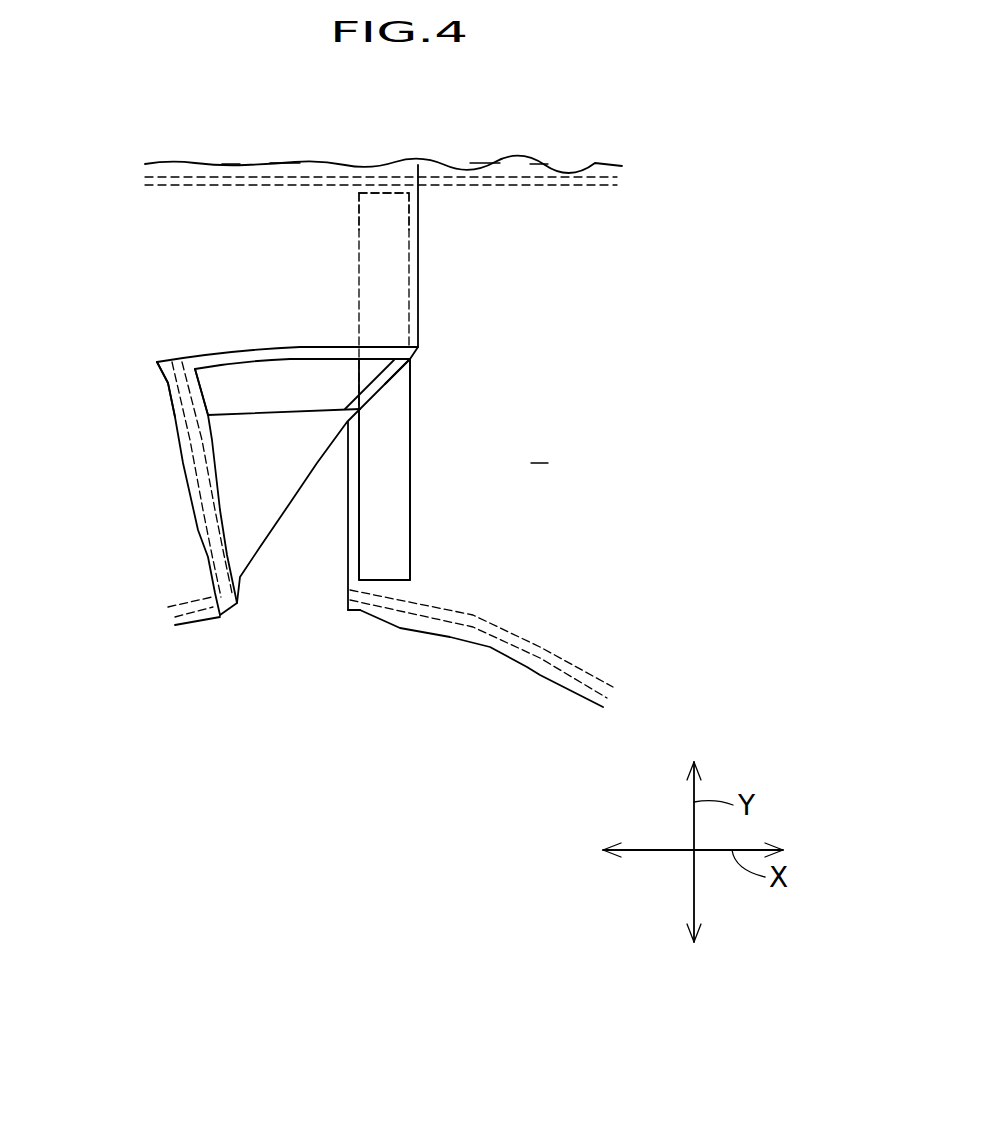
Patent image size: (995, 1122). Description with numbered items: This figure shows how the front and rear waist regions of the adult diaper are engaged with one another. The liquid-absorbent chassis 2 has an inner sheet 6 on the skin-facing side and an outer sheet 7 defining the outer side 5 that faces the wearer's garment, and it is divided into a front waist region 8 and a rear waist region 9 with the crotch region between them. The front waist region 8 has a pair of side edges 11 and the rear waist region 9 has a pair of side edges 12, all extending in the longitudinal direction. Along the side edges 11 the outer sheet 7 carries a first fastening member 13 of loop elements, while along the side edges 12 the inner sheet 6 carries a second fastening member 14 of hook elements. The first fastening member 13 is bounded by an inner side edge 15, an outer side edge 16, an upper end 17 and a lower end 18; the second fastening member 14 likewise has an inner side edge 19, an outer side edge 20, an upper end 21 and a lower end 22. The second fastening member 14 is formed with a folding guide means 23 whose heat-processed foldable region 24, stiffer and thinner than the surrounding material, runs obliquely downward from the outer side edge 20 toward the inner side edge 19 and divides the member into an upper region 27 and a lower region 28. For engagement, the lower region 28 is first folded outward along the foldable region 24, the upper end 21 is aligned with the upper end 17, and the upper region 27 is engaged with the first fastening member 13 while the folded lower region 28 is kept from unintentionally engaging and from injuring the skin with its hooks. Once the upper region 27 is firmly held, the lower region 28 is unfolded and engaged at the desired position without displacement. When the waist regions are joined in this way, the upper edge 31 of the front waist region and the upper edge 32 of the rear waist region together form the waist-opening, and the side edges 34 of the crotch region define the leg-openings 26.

The chassis 2 is at (590, 143).
The outer side 5 is at (540, 448).
The inner sheet 6 is at (207, 455).
The outer sheet 7 is at (165, 233).
The front waist region 8 is at (538, 203).
The rear waist region 9 is at (231, 200).
The side edges of the front waist region 11 is at (355, 547).
The side edges of the rear waist region 12 is at (227, 362).
The first fastening member 13 is at (410, 455).
The second fastening member 14 is at (267, 363).
The inner side edge of the first fastening member 15 is at (410, 498).
The outer side edge of the first fastening member 16 is at (359, 505).
The upper end of the first fastening member 17 is at (408, 164).
The lower end of the first fastening member 18 is at (385, 582).
The inner side edge of the second fastening member 19 is at (272, 413).
The outer side edge of the second fastening member 20 is at (292, 362).
The upper end of the second fastening member 21 is at (378, 192).
The lower end of the second fastening member 22 is at (195, 382).
The folding guide means 23 is at (461, 379).
The foldable region 24 is at (383, 380).
The leg-openings 26 is at (350, 397).
The upper region 27 is at (370, 235).
The lower region 28 is at (215, 385).
The upper edge of the front waist region 31 is at (483, 162).
The upper edge of the rear waist region 32 is at (280, 162).
The side edges of the crotch region 34 is at (202, 625).